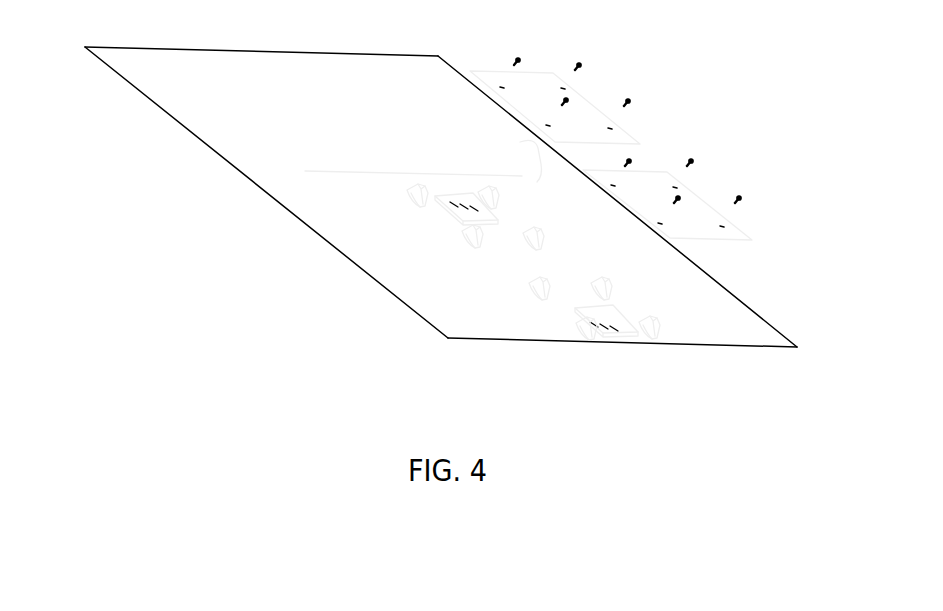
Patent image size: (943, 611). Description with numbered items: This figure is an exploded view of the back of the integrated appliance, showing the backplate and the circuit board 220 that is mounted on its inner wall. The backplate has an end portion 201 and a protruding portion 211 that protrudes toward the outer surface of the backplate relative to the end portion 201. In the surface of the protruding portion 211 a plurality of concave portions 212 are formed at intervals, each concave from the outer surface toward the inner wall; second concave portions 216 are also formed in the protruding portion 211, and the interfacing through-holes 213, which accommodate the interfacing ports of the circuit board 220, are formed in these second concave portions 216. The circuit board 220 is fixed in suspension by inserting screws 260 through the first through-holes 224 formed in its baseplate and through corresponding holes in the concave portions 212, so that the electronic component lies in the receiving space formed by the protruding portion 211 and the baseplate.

The end portion 201 is at (247, 85).
The protruding portion 211 is at (400, 243).
The concave portions 212 is at (530, 233).
The interfacing through-holes 213 is at (463, 195).
The second concave portions 216 is at (455, 211).
The circuit board 220 is at (588, 125).
The first through-hole 224 is at (675, 185).
The screw 260 is at (580, 65).